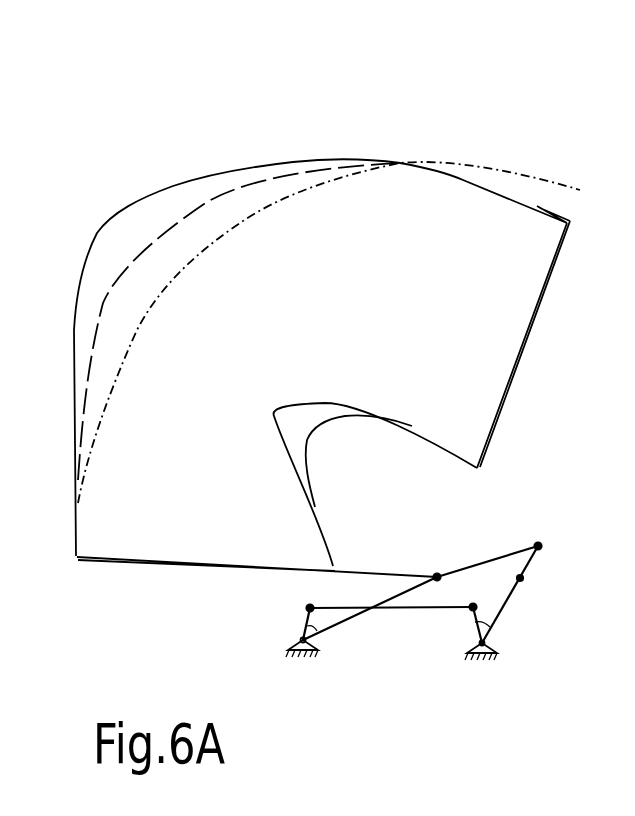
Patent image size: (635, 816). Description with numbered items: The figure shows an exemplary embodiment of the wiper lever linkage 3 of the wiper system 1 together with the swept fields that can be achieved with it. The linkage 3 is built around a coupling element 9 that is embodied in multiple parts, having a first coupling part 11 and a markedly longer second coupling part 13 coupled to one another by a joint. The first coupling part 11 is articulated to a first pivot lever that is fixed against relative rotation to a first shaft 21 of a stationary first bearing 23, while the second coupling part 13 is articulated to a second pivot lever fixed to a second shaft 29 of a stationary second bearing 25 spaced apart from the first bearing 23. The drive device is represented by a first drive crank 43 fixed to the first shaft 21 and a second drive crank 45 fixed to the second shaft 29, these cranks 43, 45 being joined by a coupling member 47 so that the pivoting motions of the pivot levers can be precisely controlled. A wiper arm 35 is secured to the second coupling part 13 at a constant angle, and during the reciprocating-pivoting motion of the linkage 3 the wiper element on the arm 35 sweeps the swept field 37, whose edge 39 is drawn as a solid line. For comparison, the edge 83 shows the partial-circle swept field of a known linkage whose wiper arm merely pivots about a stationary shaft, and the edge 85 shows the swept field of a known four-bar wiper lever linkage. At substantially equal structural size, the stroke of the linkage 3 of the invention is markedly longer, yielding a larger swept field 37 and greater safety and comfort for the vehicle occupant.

The wiper system 1 is at (522, 526).
The wiper lever linkage 3 is at (562, 560).
The coupling element 9 is at (495, 559).
The first coupling part 11 is at (534, 566).
The second coupling part 13 is at (464, 569).
The first shaft 21 is at (488, 643).
The first bearing 23 is at (482, 663).
The second bearing 25 is at (303, 660).
The second shaft 29 is at (297, 638).
The wiper arm 35 is at (347, 571).
The swept field 37 is at (343, 303).
The edge of swept field 39 is at (166, 190).
The first drive crank 43 is at (470, 624).
The second drive crank 45 is at (305, 612).
The coupling member 47 is at (388, 609).
The edge of swept field of known wiper lever linkage 83 is at (502, 168).
The edge of swept field of known four-bar wiper lever linkage 85 is at (278, 175).